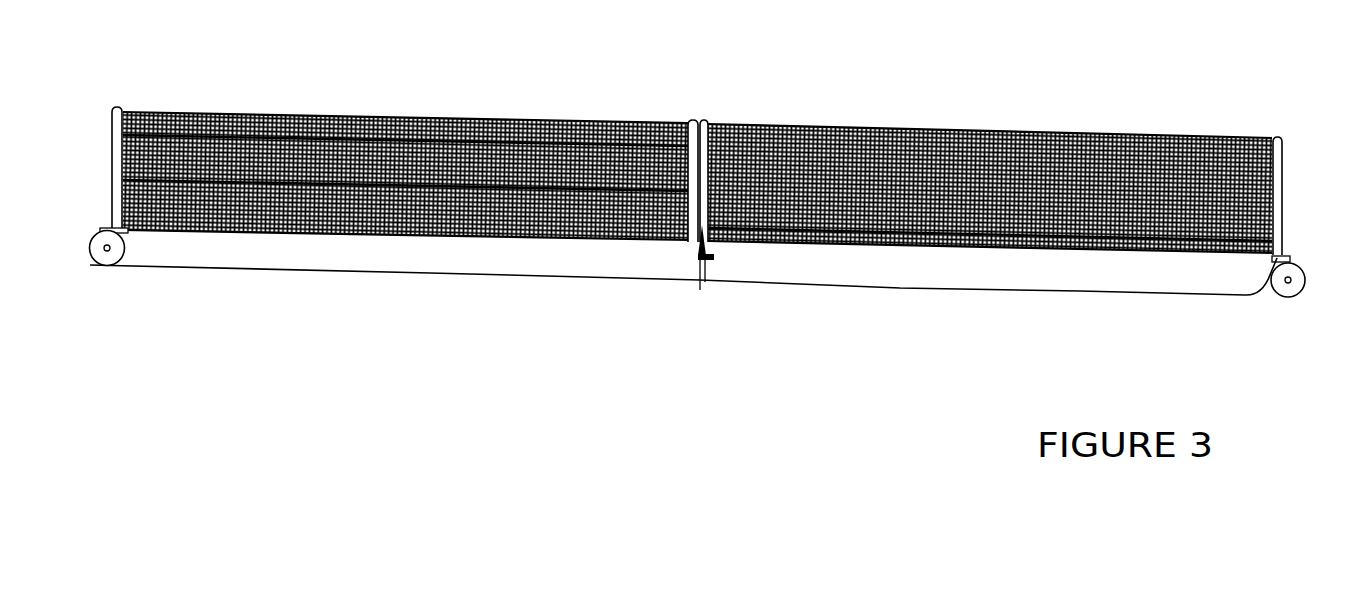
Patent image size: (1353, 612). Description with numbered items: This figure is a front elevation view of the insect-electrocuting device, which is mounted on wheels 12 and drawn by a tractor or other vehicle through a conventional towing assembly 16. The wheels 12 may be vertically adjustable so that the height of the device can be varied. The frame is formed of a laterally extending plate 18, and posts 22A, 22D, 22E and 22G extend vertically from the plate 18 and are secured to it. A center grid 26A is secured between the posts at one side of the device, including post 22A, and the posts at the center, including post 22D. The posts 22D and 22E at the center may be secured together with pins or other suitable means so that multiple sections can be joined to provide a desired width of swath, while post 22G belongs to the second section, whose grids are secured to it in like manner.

The wheels 12 is at (1293, 264).
The towing assembly 16 is at (701, 262).
The plate 18 is at (947, 278).
The post 22A is at (1278, 137).
The post 22D is at (703, 120).
The post 22E is at (692, 120).
The post 22G is at (110, 100).
The center grid 26A is at (968, 140).